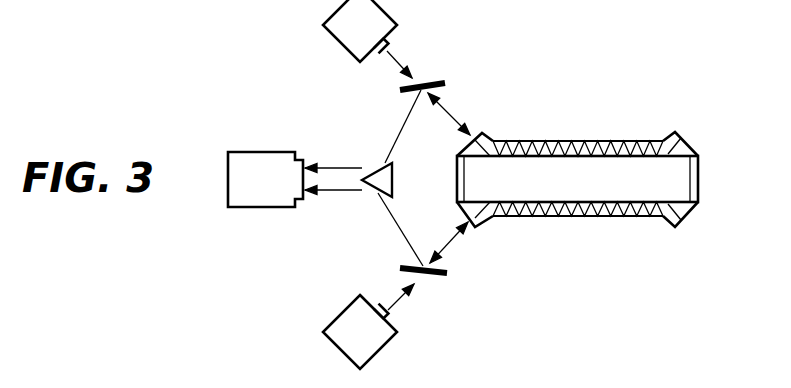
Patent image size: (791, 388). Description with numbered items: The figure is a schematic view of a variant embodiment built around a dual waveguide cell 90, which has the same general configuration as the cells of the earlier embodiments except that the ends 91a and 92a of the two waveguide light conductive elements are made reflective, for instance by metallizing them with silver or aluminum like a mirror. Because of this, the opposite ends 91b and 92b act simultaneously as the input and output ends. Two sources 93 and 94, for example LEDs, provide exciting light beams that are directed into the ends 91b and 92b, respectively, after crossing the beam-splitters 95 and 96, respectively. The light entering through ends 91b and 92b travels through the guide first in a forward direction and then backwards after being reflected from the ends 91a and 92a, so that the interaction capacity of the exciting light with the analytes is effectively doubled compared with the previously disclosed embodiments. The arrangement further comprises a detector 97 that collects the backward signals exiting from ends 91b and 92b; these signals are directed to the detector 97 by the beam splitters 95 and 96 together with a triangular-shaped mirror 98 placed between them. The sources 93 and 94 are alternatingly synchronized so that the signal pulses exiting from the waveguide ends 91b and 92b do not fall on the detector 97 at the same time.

The dual waveguide cell 90 is at (598, 193).
The reflective end 91a is at (688, 213).
The input and output end 91b is at (470, 230).
The reflective end 92a is at (686, 138).
The input and output end 92b is at (476, 134).
The light source 93 is at (348, 320).
The light source 94 is at (343, 27).
The beam-splitter 95 is at (408, 266).
The beam-splitter 96 is at (400, 91).
The detector 97 is at (258, 165).
The triangular-shaped mirror 98 is at (392, 178).